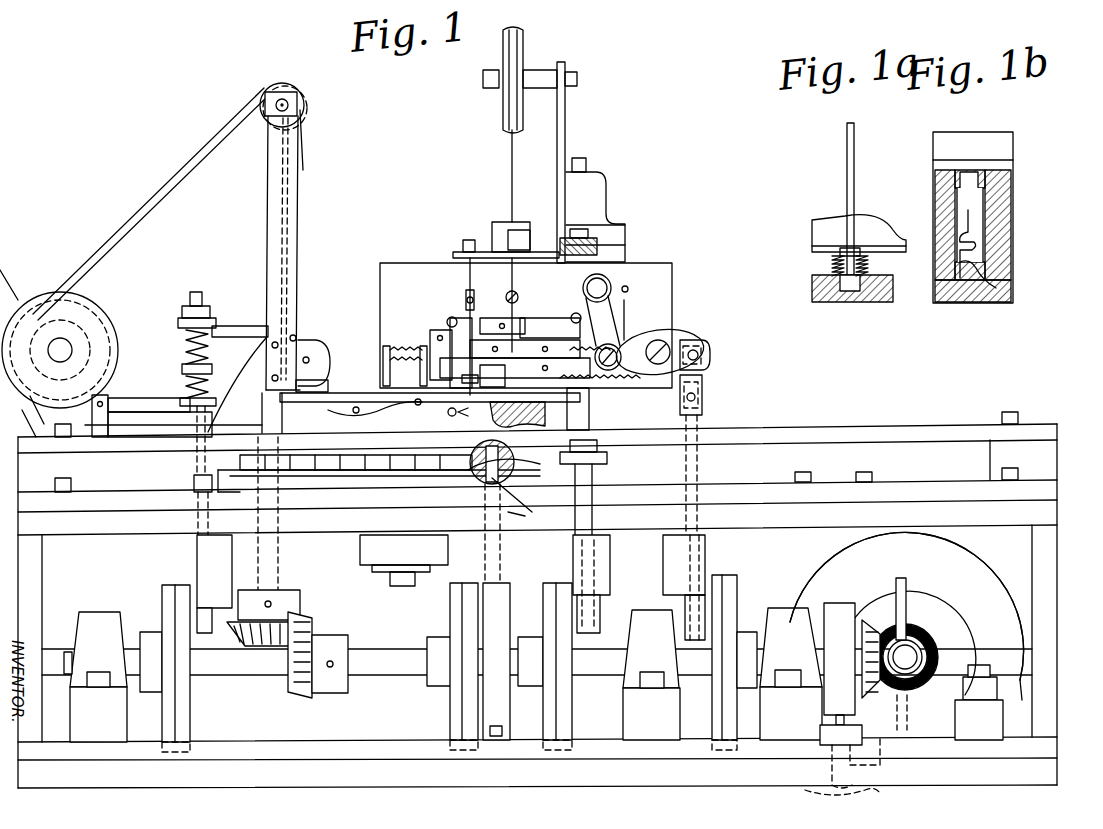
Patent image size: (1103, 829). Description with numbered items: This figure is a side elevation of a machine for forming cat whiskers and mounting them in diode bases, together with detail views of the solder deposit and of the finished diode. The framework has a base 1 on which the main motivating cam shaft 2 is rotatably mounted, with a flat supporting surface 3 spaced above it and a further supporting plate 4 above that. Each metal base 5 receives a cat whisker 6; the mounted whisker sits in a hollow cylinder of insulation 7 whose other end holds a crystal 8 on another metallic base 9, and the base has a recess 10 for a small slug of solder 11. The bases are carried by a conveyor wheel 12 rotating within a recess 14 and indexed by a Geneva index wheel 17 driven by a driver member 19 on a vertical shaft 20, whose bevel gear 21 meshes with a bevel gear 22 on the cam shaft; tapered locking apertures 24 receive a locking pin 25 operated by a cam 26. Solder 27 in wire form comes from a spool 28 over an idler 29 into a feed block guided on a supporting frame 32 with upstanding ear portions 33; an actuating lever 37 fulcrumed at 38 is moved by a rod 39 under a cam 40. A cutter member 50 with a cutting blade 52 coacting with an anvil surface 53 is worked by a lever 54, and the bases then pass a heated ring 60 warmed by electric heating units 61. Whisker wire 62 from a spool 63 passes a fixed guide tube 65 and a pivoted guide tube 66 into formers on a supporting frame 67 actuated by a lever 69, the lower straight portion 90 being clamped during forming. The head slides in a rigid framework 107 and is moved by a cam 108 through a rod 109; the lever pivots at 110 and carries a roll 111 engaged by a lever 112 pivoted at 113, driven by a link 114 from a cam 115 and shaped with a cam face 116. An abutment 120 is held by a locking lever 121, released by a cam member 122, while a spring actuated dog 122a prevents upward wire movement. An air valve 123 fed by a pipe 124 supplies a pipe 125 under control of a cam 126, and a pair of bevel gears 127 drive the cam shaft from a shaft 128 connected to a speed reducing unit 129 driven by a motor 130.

In FIG. 1, the base 1 is at (1048, 762).
In FIG. 1, the main motivating cam shaft 2 is at (384, 668).
In FIG. 1, the flat supporting surface 3 is at (928, 522).
In FIG. 1, the supporting plate 4 is at (836, 432).
In FIG. 1A, the base 5 is at (872, 300).
In FIG. 1B, the base 5 is at (968, 304).
In FIG. 1B, the cat whisker 6 is at (984, 232).
In FIG. 1B, the hollow cylinder of insulation 7 is at (1011, 258).
In FIG. 1B, the crystal 8 is at (1000, 204).
In FIG. 1B, the metallic base 9 is at (1000, 148).
In FIG. 1A, the recess 10 is at (830, 266).
In FIG. 1A, the slug of solder 11 is at (870, 268).
In FIG. 1, the conveyor wheel 12 is at (378, 392).
In FIG. 1, the recess 14 is at (540, 406).
In FIG. 1, the index wheel 17 is at (406, 468).
In FIG. 1, the driver member 19 is at (250, 462).
In FIG. 1, the vertical shaft 20 is at (296, 552).
In FIG. 1, the bevel gear 21 is at (290, 622).
In FIG. 1, the bevel gear 22 is at (290, 695).
In FIG. 1, the locking apertures 24 is at (470, 462).
In FIG. 1, the locking pin 25 is at (537, 487).
In FIG. 1, the cam 26 is at (466, 606).
In FIG. 1, the solder 27 is at (208, 140).
In FIG. 1A, the solder 27 is at (856, 158).
In FIG. 1, the spool 28 is at (10, 290).
In FIG. 1, the idler 29 is at (288, 92).
In FIG. 1, the supporting frame 32 is at (124, 380).
In FIG. 1, the upstanding ear portions 33 is at (295, 328).
In FIG. 1, the actuating lever 37 is at (168, 396).
In FIG. 1, the fulcrum 38 is at (112, 350).
In FIG. 1, the rod 39 is at (202, 304).
In FIG. 1, the cam 40 is at (182, 708).
In FIG. 1, the cutter member 50 is at (322, 362).
In FIG. 1A, the cutting blade 52 is at (858, 240).
In FIG. 1A, the anvil surface 53 is at (812, 248).
In FIG. 1, the lever 54 is at (240, 336).
In FIG. 1, the ring 60 is at (368, 402).
In FIG. 1, the electric heating units 61 is at (372, 411).
In FIG. 1, the wire 62 is at (508, 158).
In FIG. 1, the spool 63 is at (524, 46).
In FIG. 1, the fixed guide tube 65 is at (515, 276).
In FIG. 1, the pivoted guide tube 66 is at (518, 300).
In FIG. 1, the supporting frame 67 is at (398, 272).
In FIG. 1, the lever 69 is at (628, 312).
In FIG. 1B, the lower straight portion 90 is at (1000, 300).
In FIG. 1, the rigid framework 107 is at (594, 208).
In FIG. 1, the cam 108 is at (565, 708).
In FIG. 1, the rod 109 is at (590, 614).
In FIG. 1, the pivot 110 is at (612, 288).
In FIG. 1, the roll 111 is at (620, 328).
In FIG. 1, the lever 112 is at (684, 336).
In FIG. 1, the pivot 113 is at (656, 364).
In FIG. 1, the link 114 is at (706, 420).
In FIG. 1, the cam 115 is at (732, 582).
In FIG. 1, the cam face 116 is at (660, 330).
In FIG. 1, the abutment 120 is at (462, 410).
In FIG. 1, the locking lever 121 is at (450, 340).
In FIG. 1, the cam member 122 is at (468, 280).
In FIG. 1, the spring actuated dog 122a is at (512, 224).
In FIG. 1, the air valve 123 is at (890, 736).
In FIG. 1, the pipe 124 is at (810, 782).
In FIG. 1, the pipe 125 is at (908, 592).
In FIG. 1, the cam 126 is at (838, 606).
In FIG. 1, the bevel gears 127 is at (900, 640).
In FIG. 1, the shaft 128 is at (920, 660).
In FIG. 1, the speed reducing unit 129 is at (942, 612).
In FIG. 1, the motor 130 is at (958, 568).